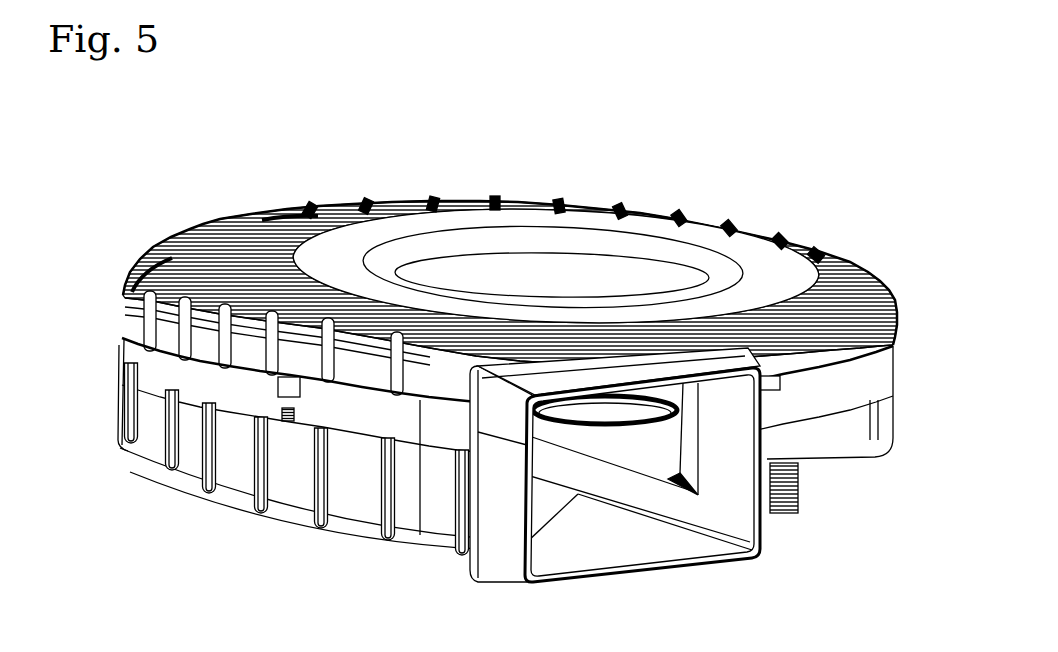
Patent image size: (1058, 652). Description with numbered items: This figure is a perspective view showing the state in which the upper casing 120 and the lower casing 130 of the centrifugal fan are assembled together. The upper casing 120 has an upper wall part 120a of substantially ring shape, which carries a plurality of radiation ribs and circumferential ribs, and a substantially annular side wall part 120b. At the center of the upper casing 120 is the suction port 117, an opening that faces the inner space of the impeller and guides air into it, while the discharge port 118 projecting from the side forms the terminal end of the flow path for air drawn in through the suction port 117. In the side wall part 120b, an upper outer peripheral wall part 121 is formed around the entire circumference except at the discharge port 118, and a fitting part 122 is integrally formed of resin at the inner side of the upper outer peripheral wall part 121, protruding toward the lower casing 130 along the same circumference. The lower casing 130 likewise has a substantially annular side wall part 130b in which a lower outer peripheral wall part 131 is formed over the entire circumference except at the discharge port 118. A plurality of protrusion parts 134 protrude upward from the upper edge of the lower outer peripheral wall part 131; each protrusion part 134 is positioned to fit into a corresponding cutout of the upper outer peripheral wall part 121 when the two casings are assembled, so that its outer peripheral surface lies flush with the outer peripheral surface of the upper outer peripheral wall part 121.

The suction port 117 is at (580, 277).
The discharge port 118 is at (607, 540).
The upper casing 120 is at (785, 202).
The upper wall part 120a is at (283, 213).
The side wall part 120b is at (130, 303).
The upper outer peripheral wall part 121 is at (860, 354).
The fitting part 122 is at (840, 385).
The lower casing 130 is at (300, 497).
The side wall part 130b is at (203, 446).
The lower outer peripheral wall part 131 is at (817, 430).
The protrusion part 134 is at (287, 388).